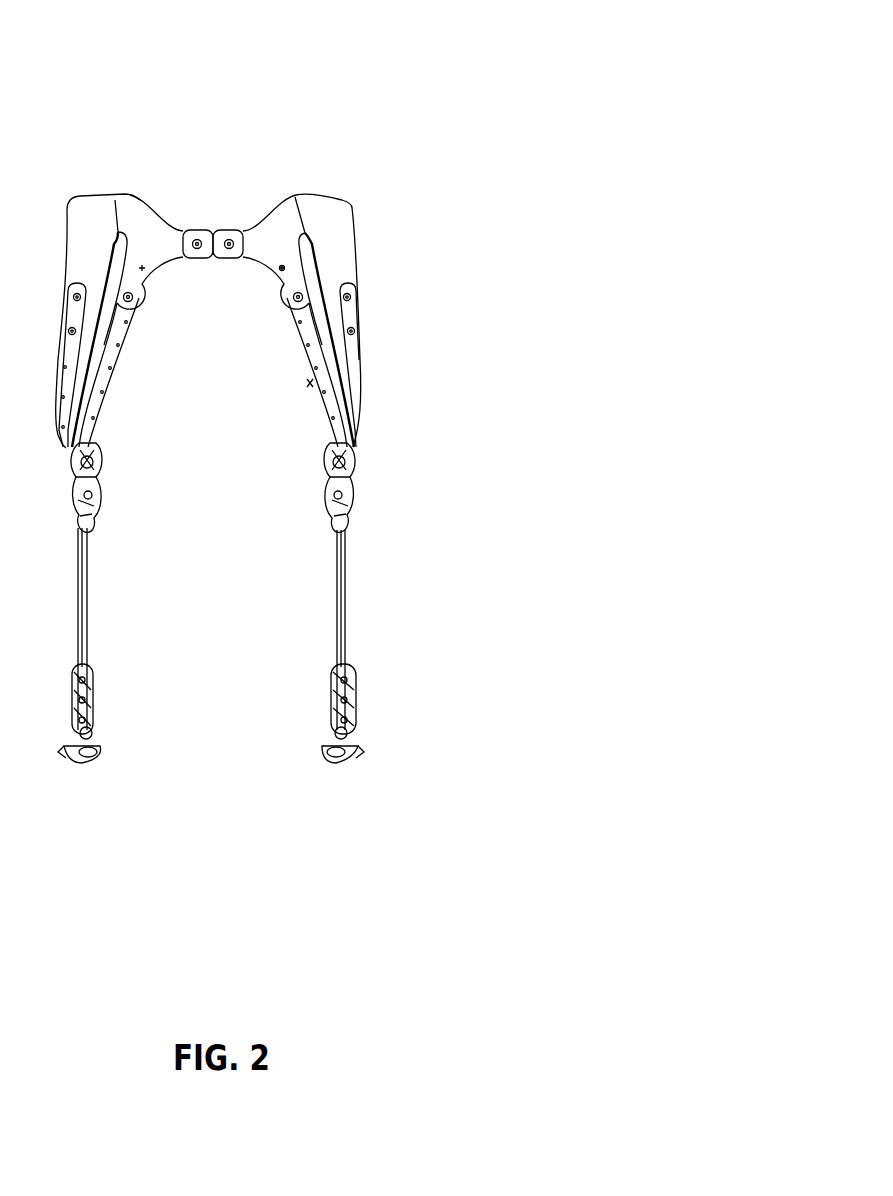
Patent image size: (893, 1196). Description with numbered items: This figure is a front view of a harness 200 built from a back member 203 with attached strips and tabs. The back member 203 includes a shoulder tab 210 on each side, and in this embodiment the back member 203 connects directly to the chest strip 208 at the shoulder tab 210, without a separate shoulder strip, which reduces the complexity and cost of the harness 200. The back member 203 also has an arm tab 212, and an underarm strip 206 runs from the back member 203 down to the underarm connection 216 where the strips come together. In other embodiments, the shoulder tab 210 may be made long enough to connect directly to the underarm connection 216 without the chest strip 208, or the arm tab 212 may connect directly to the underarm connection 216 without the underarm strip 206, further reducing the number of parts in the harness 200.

The harness 200 is at (422, 120).
The back member 203 is at (275, 238).
The underarm strip 206 is at (318, 366).
The chest strip 208 is at (358, 380).
The shoulder tab 210 is at (347, 248).
The arm tab 212 is at (275, 275).
The underarm connection 216 is at (347, 475).